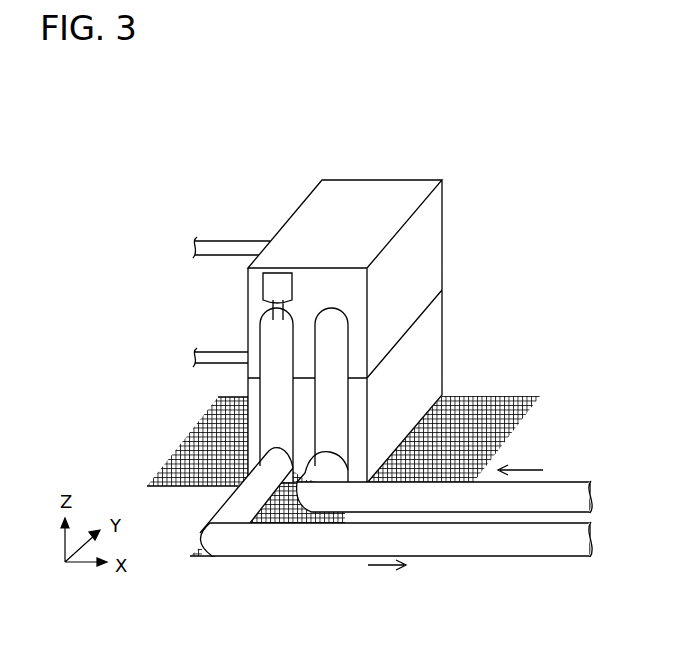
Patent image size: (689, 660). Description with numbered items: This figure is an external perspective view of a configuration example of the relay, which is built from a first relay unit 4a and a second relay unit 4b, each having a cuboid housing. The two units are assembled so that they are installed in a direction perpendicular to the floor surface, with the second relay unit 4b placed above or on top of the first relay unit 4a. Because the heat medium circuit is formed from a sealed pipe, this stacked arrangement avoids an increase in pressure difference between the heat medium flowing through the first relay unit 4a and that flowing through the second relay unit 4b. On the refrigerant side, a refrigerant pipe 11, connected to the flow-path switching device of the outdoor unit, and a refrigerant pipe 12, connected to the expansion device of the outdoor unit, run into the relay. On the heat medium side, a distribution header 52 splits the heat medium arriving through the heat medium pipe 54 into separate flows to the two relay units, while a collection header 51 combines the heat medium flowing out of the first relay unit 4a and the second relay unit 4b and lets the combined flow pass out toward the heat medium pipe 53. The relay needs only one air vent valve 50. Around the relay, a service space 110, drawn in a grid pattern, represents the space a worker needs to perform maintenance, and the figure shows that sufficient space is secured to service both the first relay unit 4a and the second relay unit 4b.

The first relay unit 4a is at (441, 381).
The second relay unit 4b is at (437, 244).
The refrigerant pipe 11 is at (218, 241).
The refrigerant pipe 12 is at (218, 351).
The air vent valve 50 is at (276, 271).
The collection header 51 is at (268, 383).
The distribution header 52 is at (348, 333).
The heat medium pipe 53 is at (520, 556).
The heat medium pipe 54 is at (564, 483).
The service space 110 is at (524, 384).